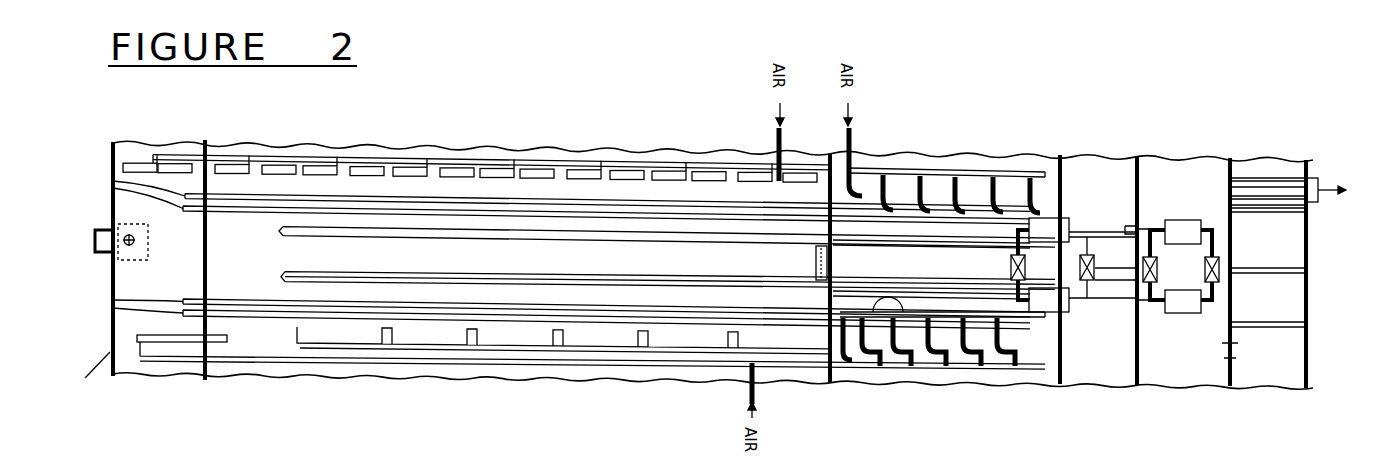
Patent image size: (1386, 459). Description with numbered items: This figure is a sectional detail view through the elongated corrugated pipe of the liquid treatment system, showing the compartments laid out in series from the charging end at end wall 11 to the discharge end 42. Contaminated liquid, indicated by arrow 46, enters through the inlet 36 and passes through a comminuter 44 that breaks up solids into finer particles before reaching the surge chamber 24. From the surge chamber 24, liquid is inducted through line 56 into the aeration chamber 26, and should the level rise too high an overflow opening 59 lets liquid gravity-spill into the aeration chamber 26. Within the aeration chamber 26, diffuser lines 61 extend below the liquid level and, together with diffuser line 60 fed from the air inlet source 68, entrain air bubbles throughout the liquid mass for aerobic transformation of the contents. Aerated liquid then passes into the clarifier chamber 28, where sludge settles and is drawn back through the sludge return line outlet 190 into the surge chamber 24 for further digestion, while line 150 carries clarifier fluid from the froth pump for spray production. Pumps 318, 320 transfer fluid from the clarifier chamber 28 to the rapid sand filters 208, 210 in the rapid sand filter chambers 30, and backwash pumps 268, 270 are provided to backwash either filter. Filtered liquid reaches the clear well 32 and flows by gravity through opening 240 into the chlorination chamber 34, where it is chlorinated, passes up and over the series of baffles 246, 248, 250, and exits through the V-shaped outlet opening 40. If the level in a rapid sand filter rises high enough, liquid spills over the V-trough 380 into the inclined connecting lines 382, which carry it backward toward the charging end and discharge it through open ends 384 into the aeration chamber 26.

The end wall 11 is at (113, 147).
The surge chamber 24 is at (177, 179).
The aeration chamber 26 is at (568, 254).
The clarifier chamber 28 is at (944, 257).
The rapid sand filter chambers 30 is at (1118, 166).
The clear well 32 is at (1170, 170).
The chlorination chamber 34 is at (1275, 167).
The inlet 36 is at (107, 257).
The outlet opening 40 is at (1309, 180).
The end 42 is at (1308, 218).
The comminuter 44 is at (125, 240).
The arrow 46 is at (96, 241).
The line 56 is at (167, 340).
The overflow opening 59 is at (212, 255).
The diffuser line 60 is at (405, 170).
The diffuser lines 61 is at (373, 160).
The air inlet source 68 is at (784, 140).
The line 150 is at (512, 348).
The sludge return line outlet 190 is at (252, 213).
The rapid sand filter 208 is at (1120, 365).
The rapid sand filter 210 is at (1108, 167).
The opening 240 is at (1233, 355).
The baffle 246 is at (1277, 329).
The baffle 248 is at (1275, 274).
The baffle 250 is at (1275, 213).
The backwash pump 268 is at (1183, 230).
The backwash pump 270 is at (1180, 305).
The pump 318 is at (1050, 227).
The pump 320 is at (1048, 300).
The V-trough 380 is at (1112, 240).
The connecting lines 382 is at (670, 280).
The open ends 384 is at (285, 274).